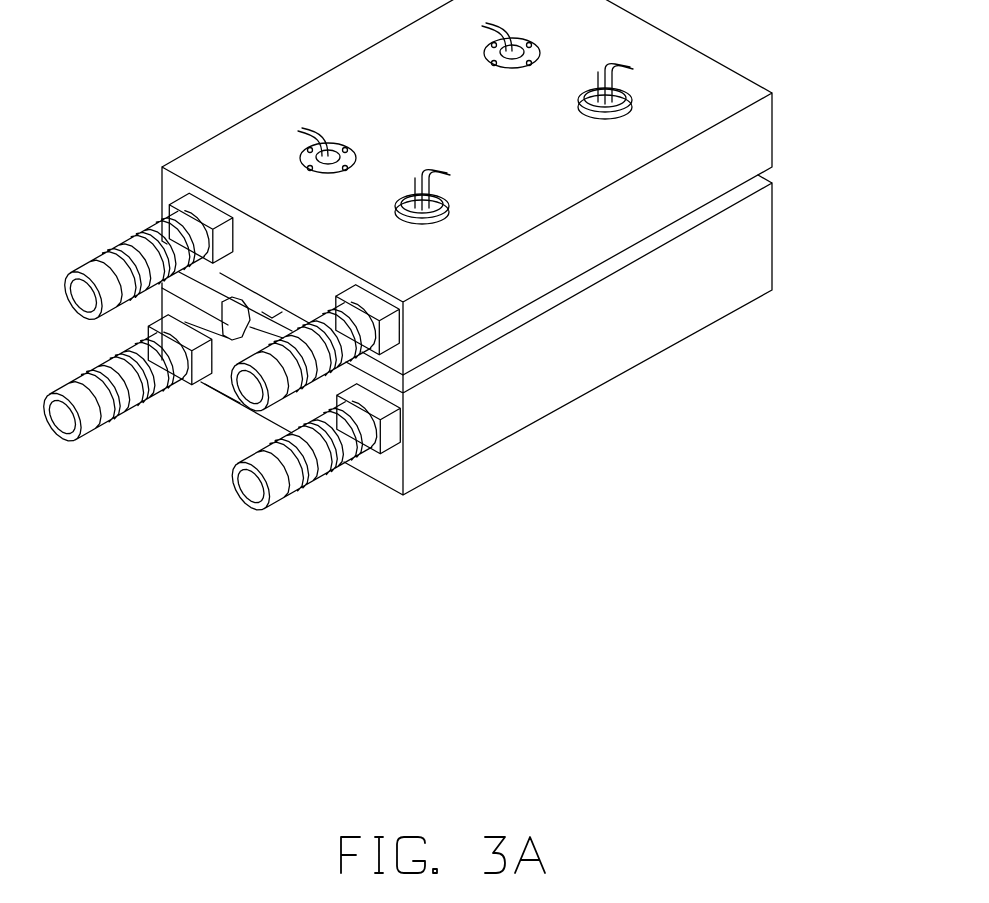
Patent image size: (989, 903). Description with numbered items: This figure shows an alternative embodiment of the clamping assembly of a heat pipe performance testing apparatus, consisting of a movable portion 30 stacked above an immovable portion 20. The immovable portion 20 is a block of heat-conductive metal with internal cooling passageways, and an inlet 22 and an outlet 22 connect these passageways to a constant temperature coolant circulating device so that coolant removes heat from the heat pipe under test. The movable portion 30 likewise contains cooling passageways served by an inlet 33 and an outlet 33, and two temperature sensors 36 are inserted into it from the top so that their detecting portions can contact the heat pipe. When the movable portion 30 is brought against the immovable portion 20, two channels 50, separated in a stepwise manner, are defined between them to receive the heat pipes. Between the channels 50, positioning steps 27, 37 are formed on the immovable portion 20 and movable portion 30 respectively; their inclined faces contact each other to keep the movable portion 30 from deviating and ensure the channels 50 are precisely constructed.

The movable portion 30 is at (745, 140).
The immovable portion 20 is at (753, 260).
The inlet and outlet 33 is at (130, 268).
The inlet and outlet 22 is at (247, 463).
The temperature sensors 36 is at (405, 178).
The positioning step 37 is at (272, 320).
The testing channel 50 is at (210, 335).
The positioning step 27 is at (223, 382).